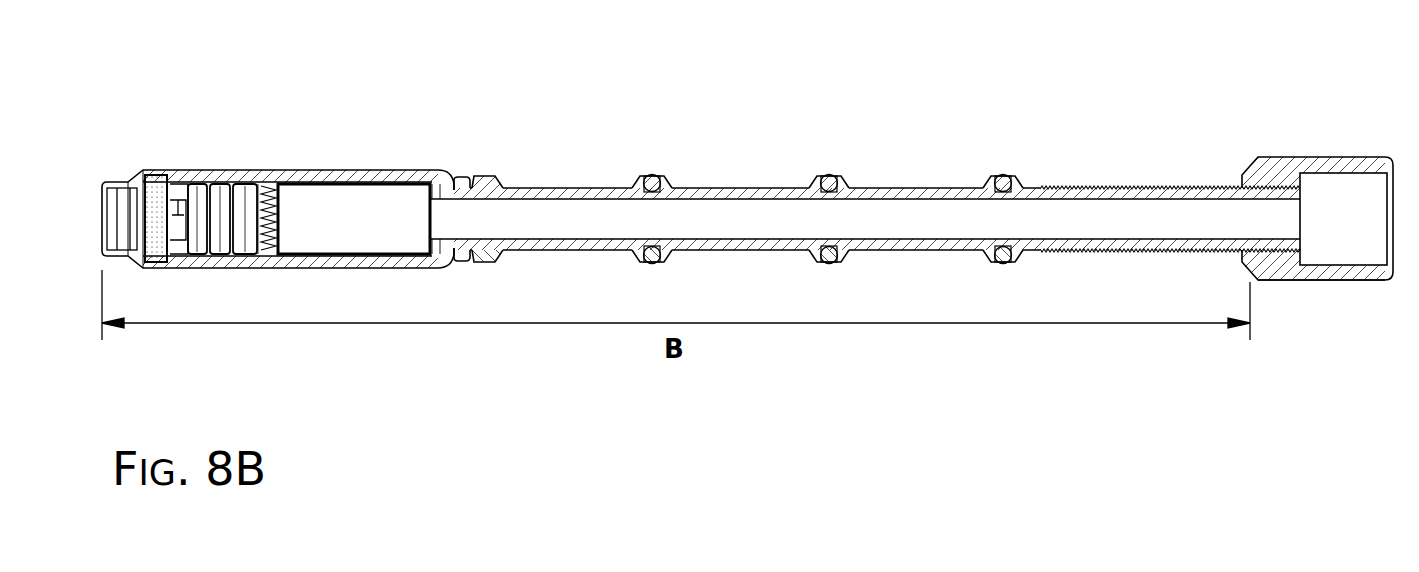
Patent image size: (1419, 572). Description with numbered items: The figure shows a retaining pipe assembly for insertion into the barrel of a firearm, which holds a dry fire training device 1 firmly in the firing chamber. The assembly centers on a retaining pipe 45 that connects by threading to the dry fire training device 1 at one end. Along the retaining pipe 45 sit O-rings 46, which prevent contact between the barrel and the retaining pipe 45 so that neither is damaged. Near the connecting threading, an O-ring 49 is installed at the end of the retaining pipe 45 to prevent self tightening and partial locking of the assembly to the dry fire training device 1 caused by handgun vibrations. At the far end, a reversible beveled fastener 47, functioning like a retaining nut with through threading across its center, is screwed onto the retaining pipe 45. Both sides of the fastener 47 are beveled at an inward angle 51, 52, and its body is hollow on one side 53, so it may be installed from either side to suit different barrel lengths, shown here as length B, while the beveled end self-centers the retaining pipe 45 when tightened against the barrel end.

The dry fire training device 1 is at (205, 146).
The retaining pipe 45 is at (742, 188).
The O-rings 46 is at (828, 174).
The reversible beveled fastener 47 is at (1338, 282).
The O-ring 49 is at (463, 176).
The inward angle bevel 51 is at (1255, 160).
The inward angle bevel 52 is at (1390, 166).
The hollow side 53 is at (1343, 196).